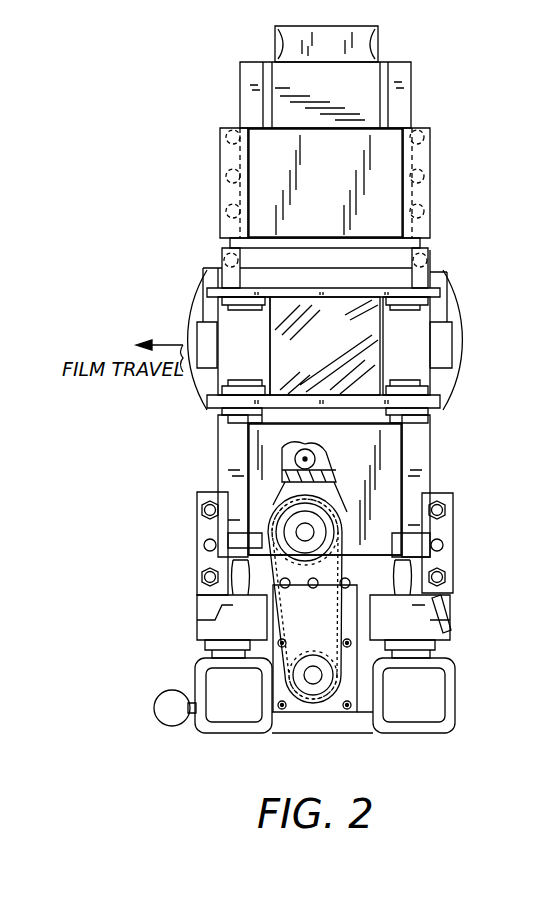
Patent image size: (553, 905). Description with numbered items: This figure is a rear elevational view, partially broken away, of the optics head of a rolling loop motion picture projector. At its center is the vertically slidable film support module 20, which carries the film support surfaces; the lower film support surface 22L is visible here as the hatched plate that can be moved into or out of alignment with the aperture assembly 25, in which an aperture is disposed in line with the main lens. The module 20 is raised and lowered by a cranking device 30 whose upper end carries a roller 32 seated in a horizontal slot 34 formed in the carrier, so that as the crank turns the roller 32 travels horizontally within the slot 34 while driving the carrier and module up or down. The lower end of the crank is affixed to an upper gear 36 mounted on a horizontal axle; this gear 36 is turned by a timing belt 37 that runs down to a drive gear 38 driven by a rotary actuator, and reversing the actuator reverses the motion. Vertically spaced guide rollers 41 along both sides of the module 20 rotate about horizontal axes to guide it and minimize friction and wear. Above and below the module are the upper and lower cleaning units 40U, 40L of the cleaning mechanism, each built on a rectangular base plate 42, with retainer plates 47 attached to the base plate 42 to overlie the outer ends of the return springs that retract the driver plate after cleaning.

The film support module 20 is at (276, 42).
The lower film support surface 22L is at (357, 362).
The aperture assembly 25 is at (417, 329).
The cranking device 30 is at (273, 491).
The roller 32 is at (283, 460).
The horizontal slot 34 is at (288, 452).
The upper gear 36 is at (275, 563).
The timing belt 37 is at (337, 625).
The drive gear 38 is at (293, 678).
The upper cleaning unit 40U is at (329, 192).
The lower cleaning unit 40L is at (403, 485).
The guide rollers 41 is at (217, 175).
The rectangular base plate 42 is at (383, 143).
The retainer plates 47 is at (442, 123).